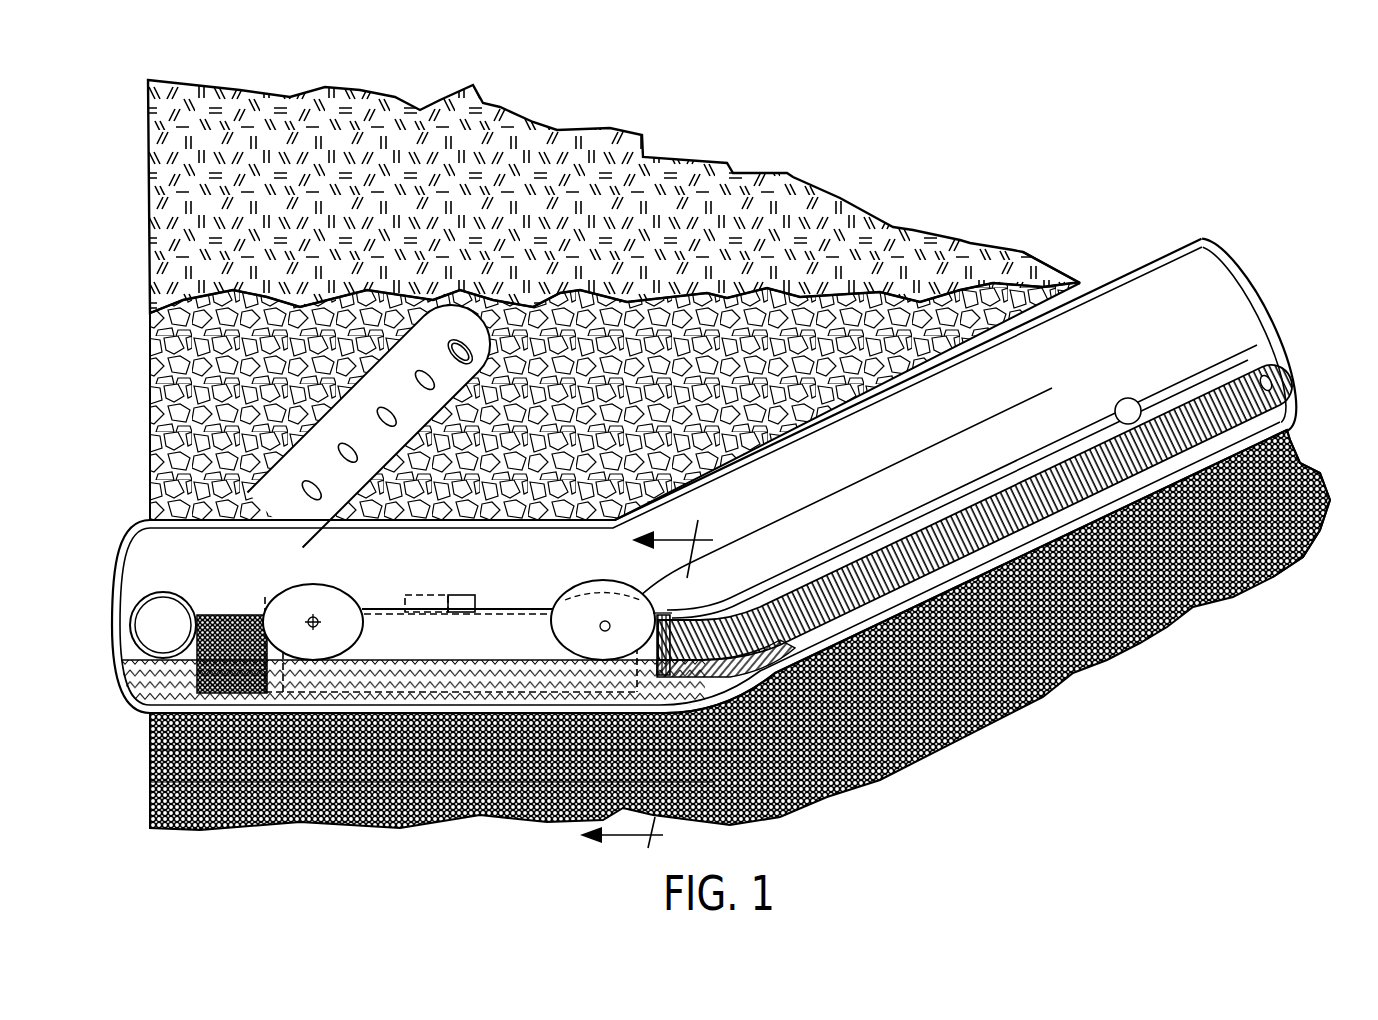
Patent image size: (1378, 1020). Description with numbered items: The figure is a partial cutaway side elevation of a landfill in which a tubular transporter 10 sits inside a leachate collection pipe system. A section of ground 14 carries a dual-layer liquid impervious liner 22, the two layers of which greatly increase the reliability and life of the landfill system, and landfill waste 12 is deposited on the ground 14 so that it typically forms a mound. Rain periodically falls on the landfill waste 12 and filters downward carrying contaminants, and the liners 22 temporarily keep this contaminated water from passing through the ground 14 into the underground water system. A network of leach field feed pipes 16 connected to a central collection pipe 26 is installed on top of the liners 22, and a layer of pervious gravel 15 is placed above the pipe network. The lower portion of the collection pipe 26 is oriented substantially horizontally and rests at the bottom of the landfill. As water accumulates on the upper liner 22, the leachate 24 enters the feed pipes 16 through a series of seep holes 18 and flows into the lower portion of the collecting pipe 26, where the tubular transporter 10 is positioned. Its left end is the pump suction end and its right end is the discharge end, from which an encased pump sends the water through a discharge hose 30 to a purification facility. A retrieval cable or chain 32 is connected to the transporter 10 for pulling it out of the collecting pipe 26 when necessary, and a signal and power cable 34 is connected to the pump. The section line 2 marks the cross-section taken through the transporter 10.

The section line 2- 2 is at (657, 683).
The tubular transporter 10 is at (517, 623).
The landfill waste 12 is at (760, 197).
The ground 14 is at (1040, 698).
The pervious gravel 15 is at (1073, 280).
The leach field feed pipes 16 is at (268, 495).
The seep holes 18 is at (383, 420).
The dual-layer liquid impervious liner 22 is at (1328, 480).
The leachate 24 is at (140, 648).
The central collection pipe 26 is at (1193, 243).
The discharge hose 30 is at (887, 570).
The retrieval cable or chain 32 is at (1013, 398).
The signal and power cable 34 is at (1135, 398).